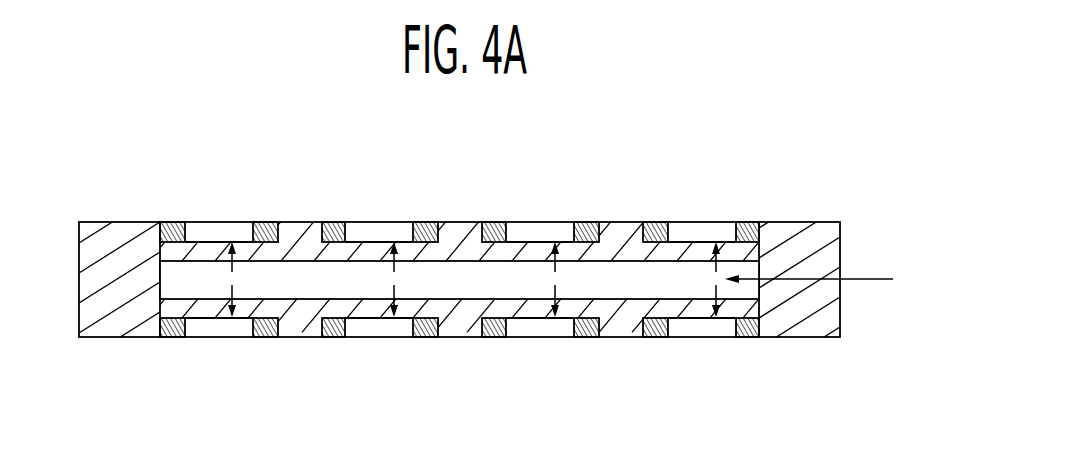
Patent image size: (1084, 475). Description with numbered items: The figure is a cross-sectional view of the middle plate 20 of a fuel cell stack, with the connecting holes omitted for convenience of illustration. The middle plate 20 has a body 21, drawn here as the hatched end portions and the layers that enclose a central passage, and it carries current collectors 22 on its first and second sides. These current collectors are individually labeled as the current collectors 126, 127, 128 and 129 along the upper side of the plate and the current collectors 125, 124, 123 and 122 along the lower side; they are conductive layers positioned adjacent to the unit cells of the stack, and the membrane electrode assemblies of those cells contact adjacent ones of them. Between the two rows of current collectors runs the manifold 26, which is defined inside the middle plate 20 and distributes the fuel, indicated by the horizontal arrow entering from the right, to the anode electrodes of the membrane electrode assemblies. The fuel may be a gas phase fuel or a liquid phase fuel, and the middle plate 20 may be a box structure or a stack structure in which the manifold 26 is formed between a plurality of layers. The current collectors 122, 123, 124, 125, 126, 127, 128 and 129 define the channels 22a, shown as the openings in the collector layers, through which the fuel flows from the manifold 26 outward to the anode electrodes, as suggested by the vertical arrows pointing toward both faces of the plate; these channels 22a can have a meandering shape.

The middle plate 20 is at (502, 259).
The body 21 is at (800, 233).
The current collectors 22 is at (749, 212).
The channels 22a is at (520, 232).
The manifold 26 is at (605, 278).
The current collector 122 is at (650, 338).
The current collector 123 is at (585, 338).
The current collector 124 is at (330, 338).
The current collector 125 is at (263, 338).
The current collector 126 is at (262, 221).
The current collector 127 is at (328, 221).
The current collector 128 is at (583, 221).
The current collector 129 is at (655, 221).